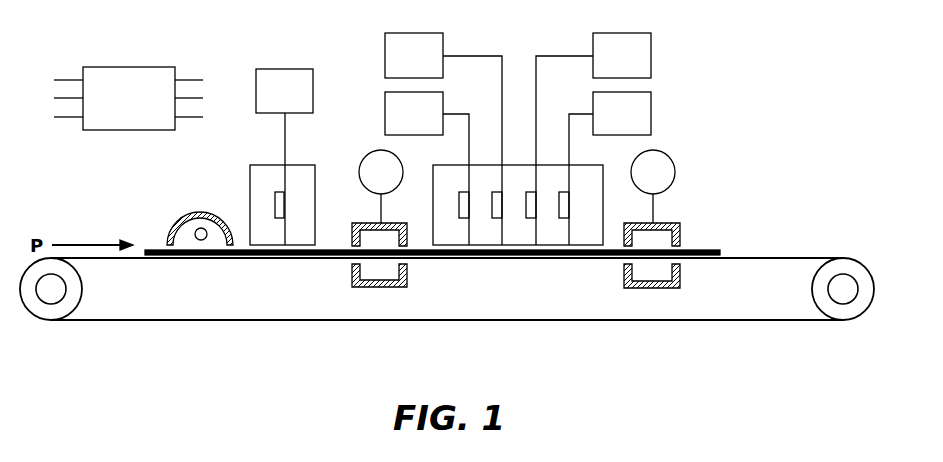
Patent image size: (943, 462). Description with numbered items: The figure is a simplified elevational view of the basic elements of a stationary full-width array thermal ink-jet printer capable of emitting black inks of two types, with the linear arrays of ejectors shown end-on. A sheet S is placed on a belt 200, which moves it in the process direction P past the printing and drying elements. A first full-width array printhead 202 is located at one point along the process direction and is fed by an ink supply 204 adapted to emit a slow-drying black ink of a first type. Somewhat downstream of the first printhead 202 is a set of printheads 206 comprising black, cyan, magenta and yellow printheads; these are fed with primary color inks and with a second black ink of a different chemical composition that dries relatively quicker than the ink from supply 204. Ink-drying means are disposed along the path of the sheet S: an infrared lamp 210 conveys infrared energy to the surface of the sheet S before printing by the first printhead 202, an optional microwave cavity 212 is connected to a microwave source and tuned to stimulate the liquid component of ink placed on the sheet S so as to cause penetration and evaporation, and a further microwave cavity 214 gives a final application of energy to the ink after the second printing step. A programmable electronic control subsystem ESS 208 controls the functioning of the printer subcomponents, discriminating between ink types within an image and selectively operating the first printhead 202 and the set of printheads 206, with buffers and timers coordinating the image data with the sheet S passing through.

The belt 200 is at (522, 320).
The first full-width array printhead 202 is at (263, 172).
The ink supply 204 is at (285, 69).
The set of printheads 206 is at (587, 230).
The electronic control subsystem ESS 208 is at (128, 67).
The infrared lamp 210 is at (195, 213).
The microwave cavity 212 is at (362, 222).
The further microwave cavity 214 is at (670, 222).
The sheet S is at (703, 250).